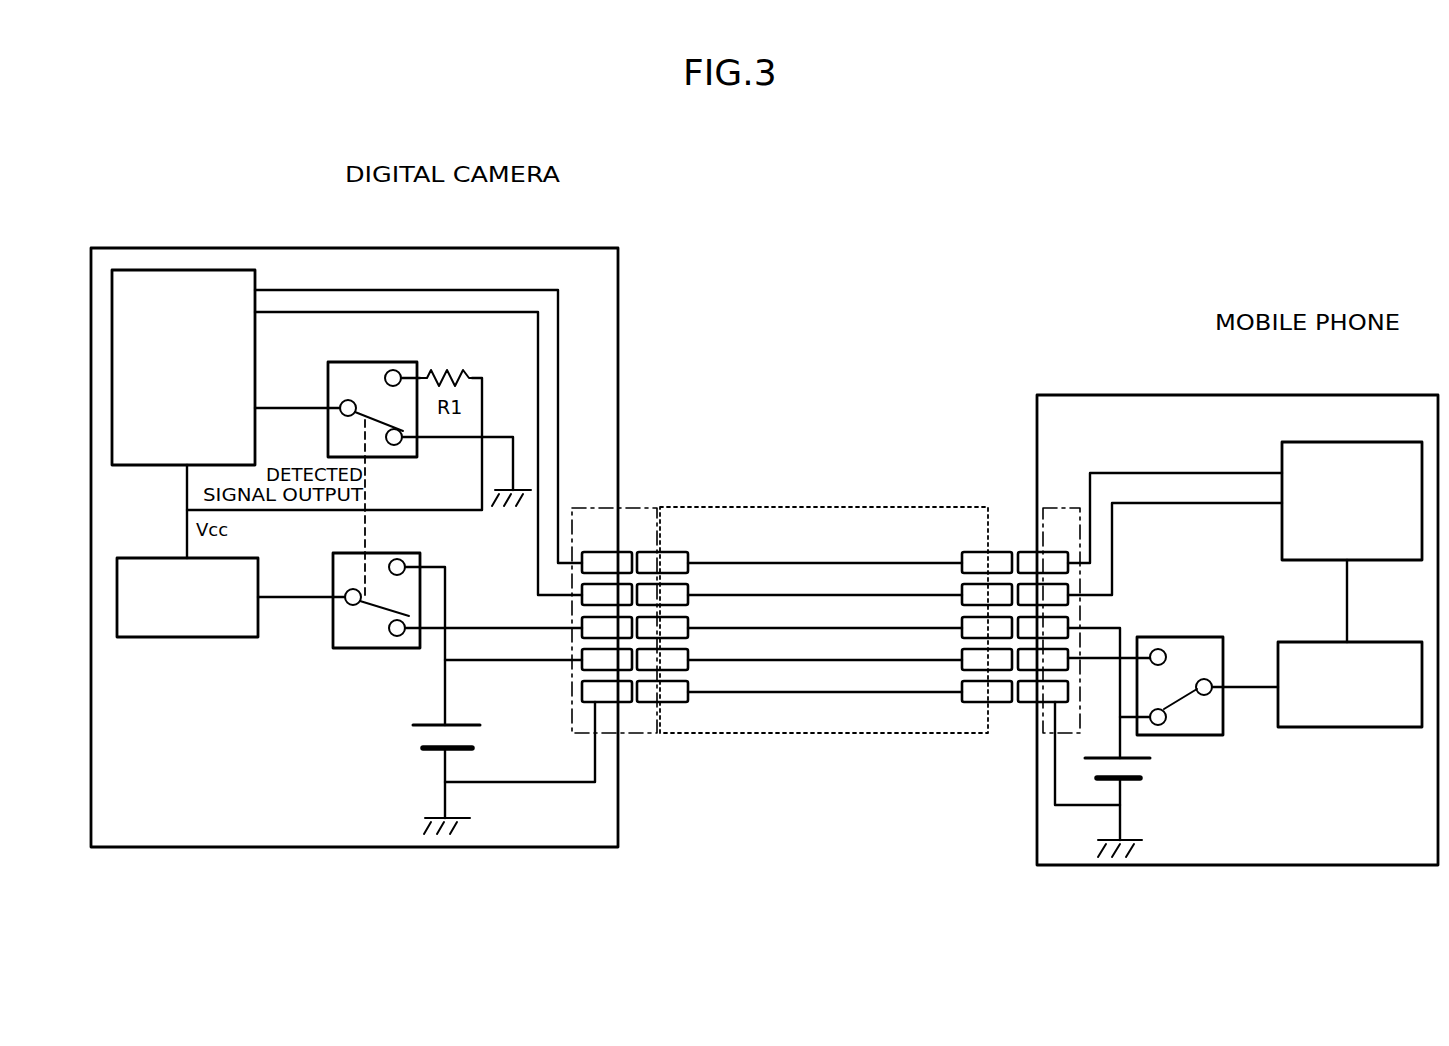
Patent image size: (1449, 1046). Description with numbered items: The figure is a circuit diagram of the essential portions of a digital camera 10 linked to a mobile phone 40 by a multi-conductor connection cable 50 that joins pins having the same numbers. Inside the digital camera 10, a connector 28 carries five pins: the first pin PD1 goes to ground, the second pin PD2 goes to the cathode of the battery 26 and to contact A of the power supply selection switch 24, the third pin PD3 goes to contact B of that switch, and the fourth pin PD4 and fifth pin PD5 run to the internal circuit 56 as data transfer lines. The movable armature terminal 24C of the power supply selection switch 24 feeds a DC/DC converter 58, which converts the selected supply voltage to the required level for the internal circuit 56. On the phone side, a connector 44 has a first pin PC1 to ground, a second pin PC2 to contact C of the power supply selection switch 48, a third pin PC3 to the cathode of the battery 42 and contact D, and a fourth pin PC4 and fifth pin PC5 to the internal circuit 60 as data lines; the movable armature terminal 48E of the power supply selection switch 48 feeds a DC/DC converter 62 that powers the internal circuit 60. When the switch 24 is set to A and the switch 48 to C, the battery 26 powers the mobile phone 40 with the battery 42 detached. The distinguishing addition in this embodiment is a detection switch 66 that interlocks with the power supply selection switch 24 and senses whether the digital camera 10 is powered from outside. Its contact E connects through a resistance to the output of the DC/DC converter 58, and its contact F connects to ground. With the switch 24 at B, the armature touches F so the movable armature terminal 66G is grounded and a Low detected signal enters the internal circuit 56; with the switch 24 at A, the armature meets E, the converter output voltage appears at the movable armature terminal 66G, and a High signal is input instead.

The digital camera 10 is at (283, 246).
The internal circuit 56 is at (150, 468).
The detection switch 66 is at (400, 372).
The movable armature terminal 66G is at (341, 404).
The power supply selection switch 24 is at (333, 622).
The movable armature terminal 24C is at (346, 592).
The DC/DC converter 58 is at (152, 640).
The battery 26 is at (418, 738).
The connector 28 is at (659, 621).
The multi-conductor connection cable 50 is at (770, 506).
The mobile phone 40 is at (1153, 393).
The connector 44 is at (1001, 628).
The internal circuit 60 is at (1357, 442).
The power supply selection switch 48 is at (1180, 636).
The movable armature terminal 48E is at (1205, 696).
The DC/DC converter 62 is at (1376, 728).
The battery 42 is at (1145, 772).
The first pin PD1 is at (607, 695).
The second pin PD2 is at (603, 660).
The third pin PD3 is at (612, 630).
The fourth pin PD4 is at (612, 594).
The fifth pin PD5 is at (596, 563).
The first pin PC1 is at (1050, 700).
The second pin PC2 is at (1042, 662).
The third pin PC3 is at (1032, 630).
The fourth pin PC4 is at (1022, 597).
The fifth pin PC5 is at (1028, 563).